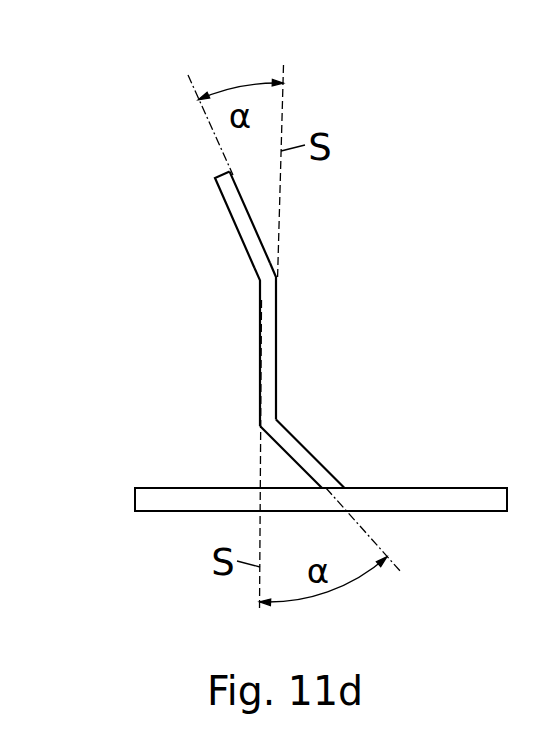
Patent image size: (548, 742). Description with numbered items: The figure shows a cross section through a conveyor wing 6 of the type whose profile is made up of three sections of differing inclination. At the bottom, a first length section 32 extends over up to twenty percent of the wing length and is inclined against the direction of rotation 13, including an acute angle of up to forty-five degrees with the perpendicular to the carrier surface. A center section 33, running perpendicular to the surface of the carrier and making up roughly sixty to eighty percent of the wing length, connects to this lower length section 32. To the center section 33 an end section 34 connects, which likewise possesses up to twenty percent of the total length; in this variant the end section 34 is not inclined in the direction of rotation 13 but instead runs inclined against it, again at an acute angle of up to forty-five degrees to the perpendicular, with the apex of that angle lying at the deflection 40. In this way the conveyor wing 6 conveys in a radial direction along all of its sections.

The direction of rotation 13 is at (80, 173).
The conveyor wing 6 is at (253, 337).
The end section 34 is at (240, 233).
The deflection 40 is at (277, 280).
The center section 33 is at (272, 315).
The first length section 32 is at (305, 470).